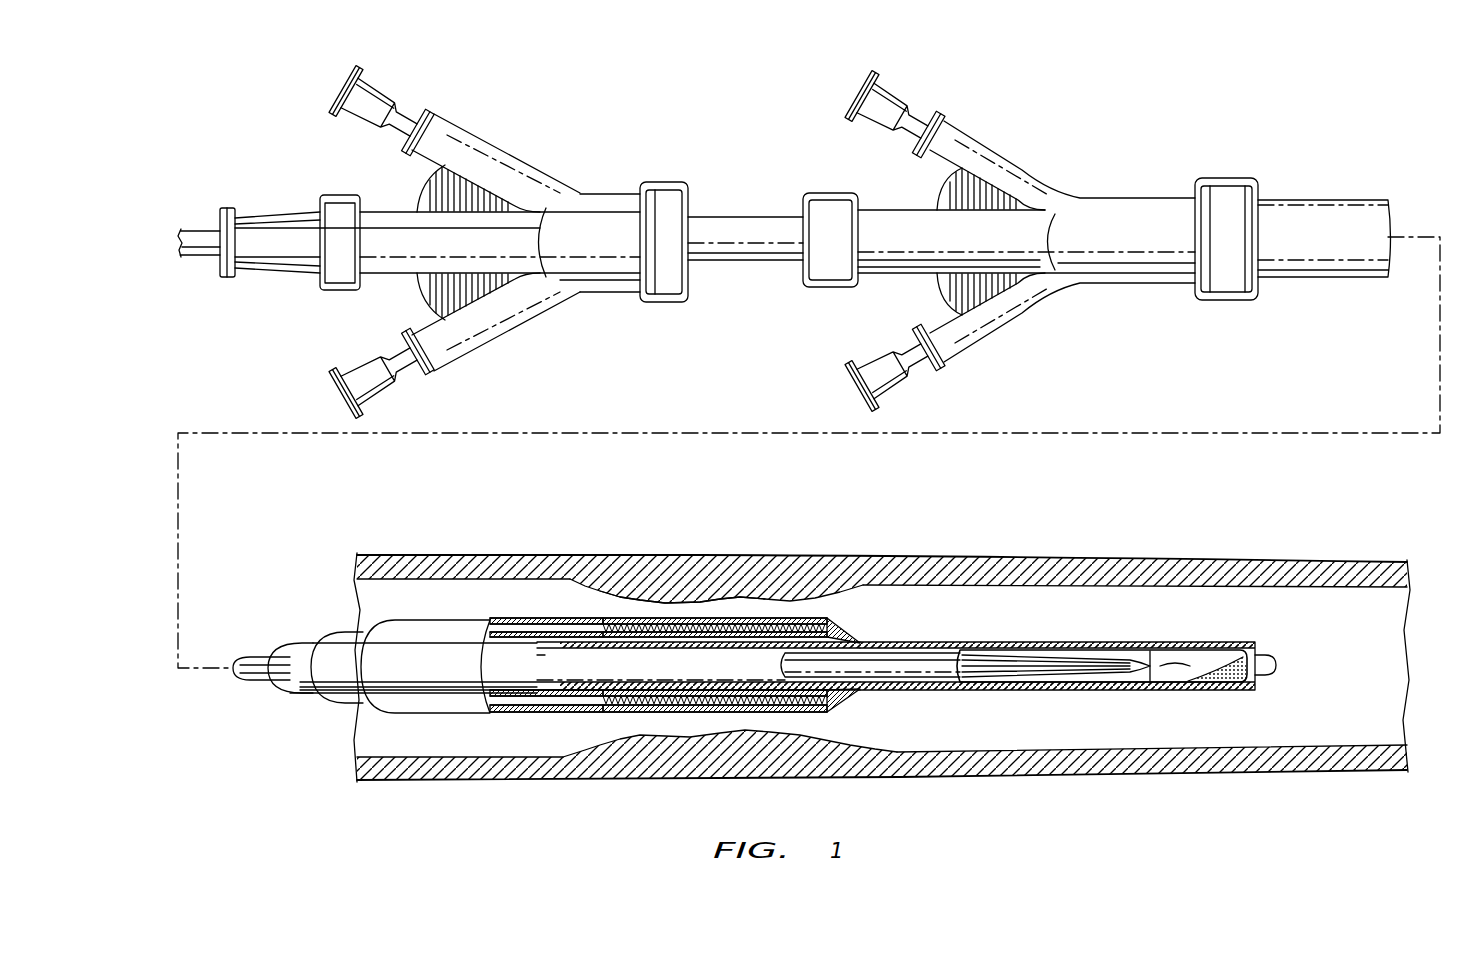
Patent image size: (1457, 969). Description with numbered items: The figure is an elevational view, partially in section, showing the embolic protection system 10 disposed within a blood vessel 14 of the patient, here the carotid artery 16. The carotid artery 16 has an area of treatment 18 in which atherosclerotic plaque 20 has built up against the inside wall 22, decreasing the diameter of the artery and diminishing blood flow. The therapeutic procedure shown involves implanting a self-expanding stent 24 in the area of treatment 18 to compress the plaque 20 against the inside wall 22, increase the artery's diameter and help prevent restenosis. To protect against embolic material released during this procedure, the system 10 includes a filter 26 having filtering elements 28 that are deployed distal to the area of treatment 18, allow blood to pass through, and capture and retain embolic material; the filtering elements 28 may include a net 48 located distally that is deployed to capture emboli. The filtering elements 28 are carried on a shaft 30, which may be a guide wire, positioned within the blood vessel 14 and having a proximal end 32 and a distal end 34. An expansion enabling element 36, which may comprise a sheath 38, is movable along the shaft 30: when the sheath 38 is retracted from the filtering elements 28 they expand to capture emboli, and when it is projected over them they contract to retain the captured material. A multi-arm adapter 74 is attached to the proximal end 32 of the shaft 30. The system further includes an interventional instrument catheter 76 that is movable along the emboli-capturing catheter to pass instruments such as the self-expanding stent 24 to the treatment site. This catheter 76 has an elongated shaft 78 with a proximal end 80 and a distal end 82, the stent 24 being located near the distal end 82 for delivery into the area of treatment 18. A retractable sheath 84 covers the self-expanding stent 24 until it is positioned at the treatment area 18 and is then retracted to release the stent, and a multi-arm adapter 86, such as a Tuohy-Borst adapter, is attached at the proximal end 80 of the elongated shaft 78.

The embolic protection system 10 is at (690, 663).
The blood vessel 14 is at (956, 563).
The carotid artery 16 is at (447, 556).
The area of treatment 18 is at (728, 600).
The atherosclerotic plaque 20 is at (684, 590).
The inside wall 22 is at (596, 568).
The self-expanding stent 24 is at (797, 620).
The filter 26 is at (948, 664).
The filtering elements 28 is at (1154, 669).
The shaft 30 is at (886, 663).
The proximal end 32 is at (753, 216).
The distal end 34 is at (1277, 667).
The expansion enabling element 36 is at (895, 643).
The sheath 38 is at (1099, 645).
The net 48 is at (1188, 655).
The multi-arm adapter 74 is at (596, 212).
The interventional instrument catheter 76 is at (515, 620).
The elongated shaft 78 is at (633, 633).
The proximal end 80 is at (1312, 215).
The distal end 82 is at (848, 620).
The retractable sheath 84 is at (727, 617).
The multi-arm adapter 86 is at (1123, 210).